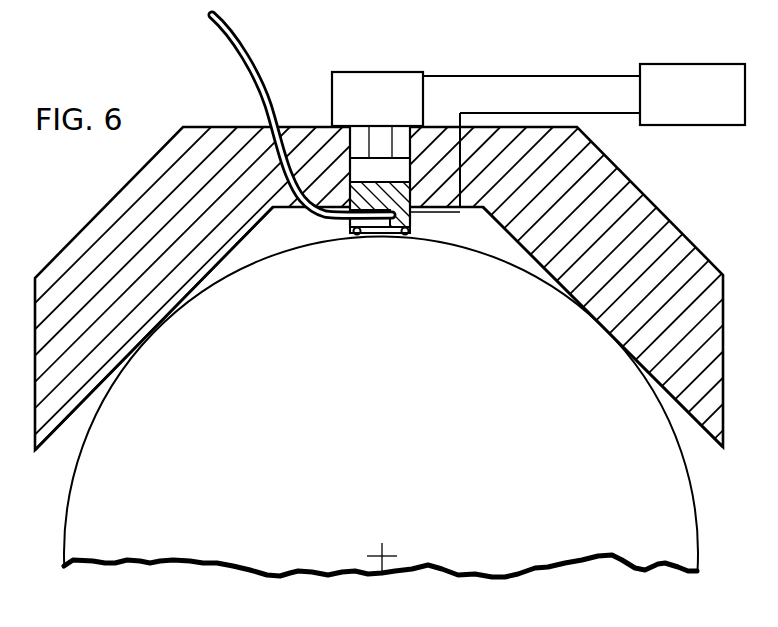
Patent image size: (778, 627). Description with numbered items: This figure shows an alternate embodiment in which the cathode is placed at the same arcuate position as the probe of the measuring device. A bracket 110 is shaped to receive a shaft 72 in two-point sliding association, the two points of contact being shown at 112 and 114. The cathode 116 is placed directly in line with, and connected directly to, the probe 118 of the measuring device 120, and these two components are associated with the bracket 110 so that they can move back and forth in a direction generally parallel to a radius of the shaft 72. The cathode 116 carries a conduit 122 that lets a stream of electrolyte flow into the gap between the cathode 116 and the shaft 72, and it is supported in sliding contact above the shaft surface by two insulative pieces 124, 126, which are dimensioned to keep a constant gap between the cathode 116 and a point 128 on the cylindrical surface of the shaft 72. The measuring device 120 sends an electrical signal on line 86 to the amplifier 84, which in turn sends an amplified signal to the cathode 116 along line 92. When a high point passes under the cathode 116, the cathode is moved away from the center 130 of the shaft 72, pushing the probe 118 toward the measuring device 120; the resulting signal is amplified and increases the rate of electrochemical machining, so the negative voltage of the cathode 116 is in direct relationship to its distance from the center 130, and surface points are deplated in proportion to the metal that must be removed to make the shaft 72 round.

The shaft 72 is at (685, 540).
The amplifier 84 is at (662, 64).
The line 86 is at (538, 76).
The line 92 is at (482, 112).
The bracket 110 is at (653, 215).
The point of contact 112 is at (143, 342).
The point of contact 114 is at (602, 328).
The cathode 116 is at (412, 221).
The probe 118 is at (375, 135).
The measuring device 120 is at (360, 72).
The conduit 122 is at (248, 42).
The insulative piece 124 is at (355, 238).
The insulative piece 126 is at (413, 234).
The point on the cylindrical surface of the shaft 128 is at (377, 240).
The center of the shaft 130 is at (397, 554).